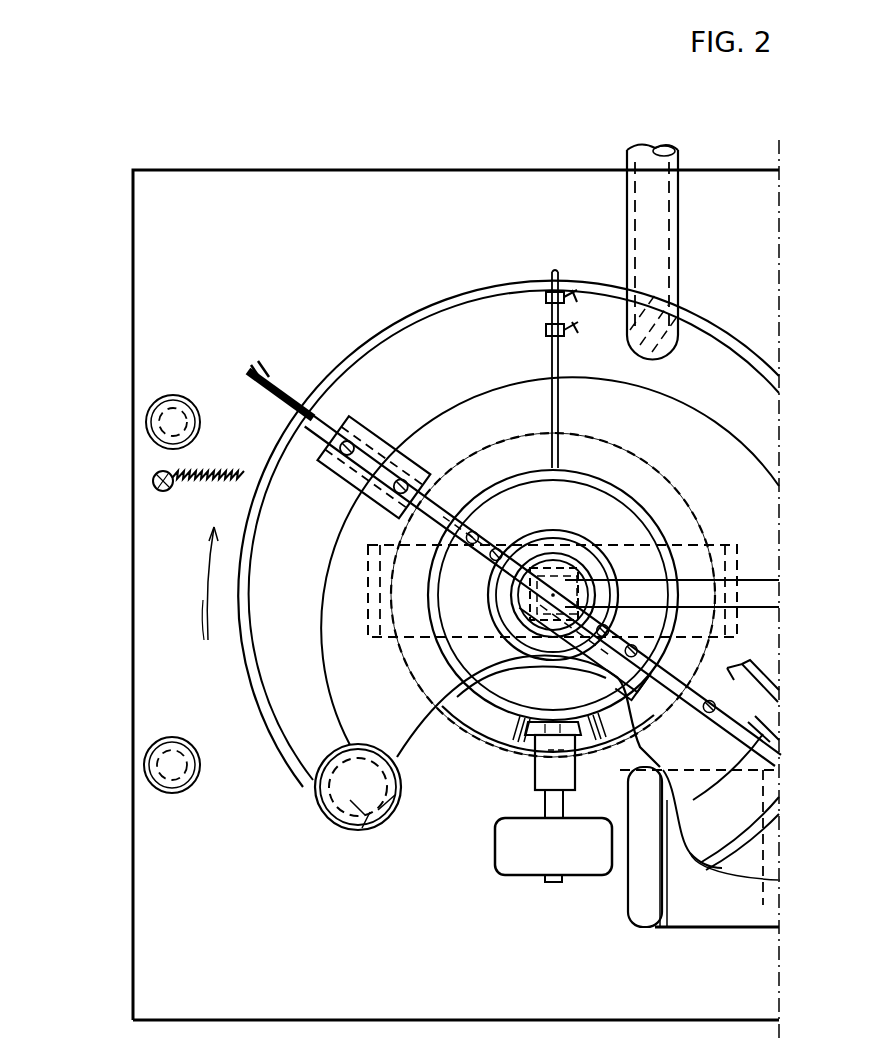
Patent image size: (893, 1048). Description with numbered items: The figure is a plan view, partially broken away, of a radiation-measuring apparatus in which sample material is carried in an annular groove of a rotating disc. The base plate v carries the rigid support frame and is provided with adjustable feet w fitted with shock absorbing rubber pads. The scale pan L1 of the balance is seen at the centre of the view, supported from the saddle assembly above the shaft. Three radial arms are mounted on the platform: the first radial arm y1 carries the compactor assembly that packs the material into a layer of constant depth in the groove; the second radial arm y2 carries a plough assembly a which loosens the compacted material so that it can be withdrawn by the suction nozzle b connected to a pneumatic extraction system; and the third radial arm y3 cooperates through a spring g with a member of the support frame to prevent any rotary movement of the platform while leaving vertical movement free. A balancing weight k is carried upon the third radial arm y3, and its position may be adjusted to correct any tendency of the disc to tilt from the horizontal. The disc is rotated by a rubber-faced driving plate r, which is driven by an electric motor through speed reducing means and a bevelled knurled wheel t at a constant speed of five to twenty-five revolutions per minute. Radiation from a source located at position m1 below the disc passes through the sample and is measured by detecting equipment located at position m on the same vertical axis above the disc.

The suction nozzle b is at (655, 200).
The plough assembly a is at (548, 330).
The second radial arm y2 is at (550, 390).
The third radial arm y3 is at (322, 428).
The balancing weight k is at (382, 452).
The spring g is at (224, 395).
The adjustable feet w is at (165, 420).
The scale pan L1 is at (535, 594).
The first radial arm y1 is at (733, 727).
The driving plate r is at (487, 730).
The base plate v is at (310, 745).
The bevelled knurled wheel t is at (540, 775).
The detecting equipment position m is at (330, 818).
The radiation source position m1 is at (377, 823).